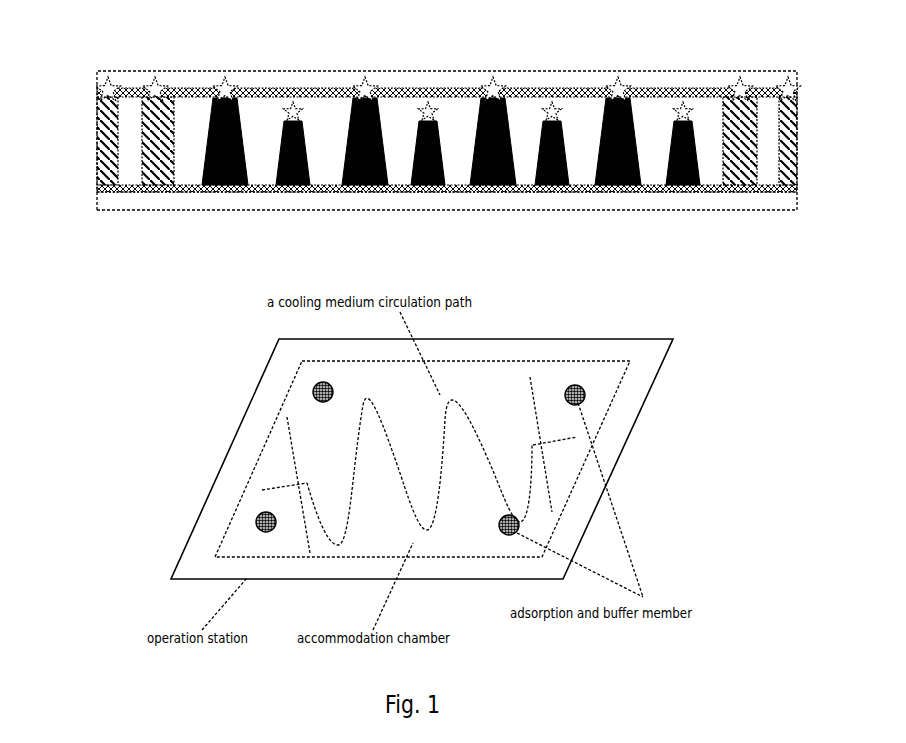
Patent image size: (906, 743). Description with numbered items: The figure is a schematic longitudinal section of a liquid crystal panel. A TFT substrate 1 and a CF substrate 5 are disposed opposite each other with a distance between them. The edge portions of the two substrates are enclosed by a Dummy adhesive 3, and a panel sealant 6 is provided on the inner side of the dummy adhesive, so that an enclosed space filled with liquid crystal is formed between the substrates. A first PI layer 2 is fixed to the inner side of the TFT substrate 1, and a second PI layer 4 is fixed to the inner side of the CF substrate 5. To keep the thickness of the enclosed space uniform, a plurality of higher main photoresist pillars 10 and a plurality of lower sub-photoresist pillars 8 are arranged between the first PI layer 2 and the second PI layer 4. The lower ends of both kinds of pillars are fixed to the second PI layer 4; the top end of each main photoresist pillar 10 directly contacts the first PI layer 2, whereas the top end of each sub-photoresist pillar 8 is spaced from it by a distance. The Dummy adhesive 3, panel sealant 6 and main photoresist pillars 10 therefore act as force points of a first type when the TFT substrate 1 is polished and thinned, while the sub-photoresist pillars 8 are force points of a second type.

The TFT substrate 1 is at (662, 78).
The first PI layer 2 is at (697, 90).
The Dummy adhesive 3 is at (102, 140).
The second PI layer 4 is at (667, 188).
The CF substrate 5 is at (712, 200).
The panel sealant 6 is at (140, 118).
The sub-photoresist pillar 8 is at (488, 143).
The main photoresist pillar 10 is at (421, 131).